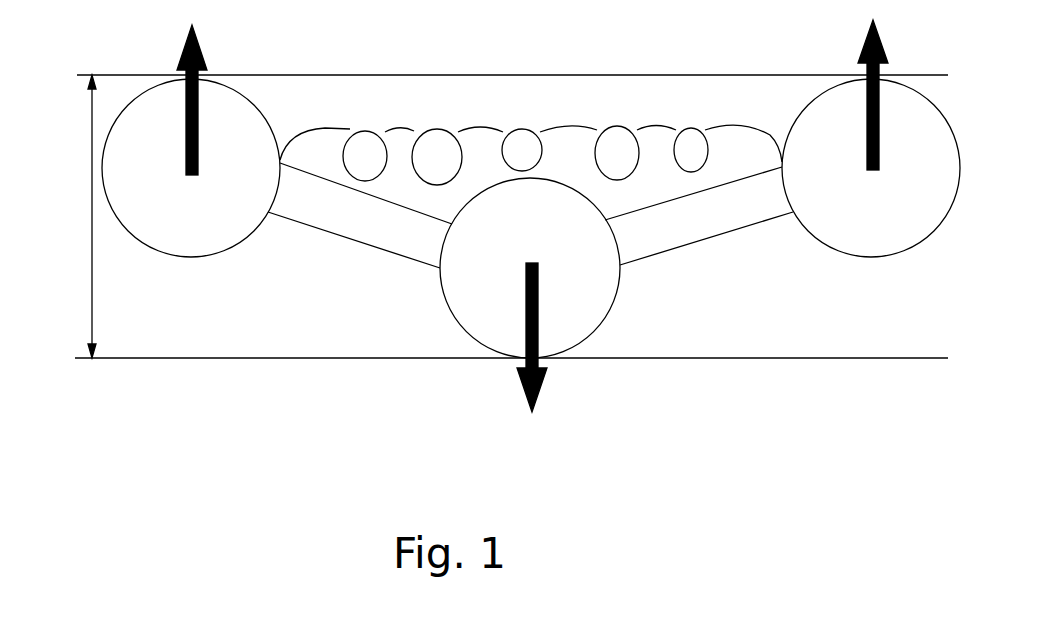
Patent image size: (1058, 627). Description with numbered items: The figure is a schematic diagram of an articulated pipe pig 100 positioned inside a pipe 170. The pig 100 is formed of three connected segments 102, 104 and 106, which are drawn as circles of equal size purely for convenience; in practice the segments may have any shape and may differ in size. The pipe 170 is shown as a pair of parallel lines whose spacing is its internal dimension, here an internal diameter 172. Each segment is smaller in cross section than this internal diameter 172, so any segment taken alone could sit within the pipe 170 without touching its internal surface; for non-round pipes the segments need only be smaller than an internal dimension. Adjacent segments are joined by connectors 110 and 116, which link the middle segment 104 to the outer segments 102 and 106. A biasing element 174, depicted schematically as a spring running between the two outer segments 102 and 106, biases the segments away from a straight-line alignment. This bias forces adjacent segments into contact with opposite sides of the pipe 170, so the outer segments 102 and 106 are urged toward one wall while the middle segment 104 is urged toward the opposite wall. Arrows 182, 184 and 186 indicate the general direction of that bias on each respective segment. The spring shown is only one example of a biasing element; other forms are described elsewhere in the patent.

The pipe pig 100 is at (326, 299).
The segment 102 is at (863, 257).
The segment 104 is at (612, 308).
The segment 106 is at (195, 258).
The connector 110 is at (713, 240).
The connector 116 is at (420, 262).
The pipe 170 is at (440, 73).
The internal diameter 172 is at (69, 216).
The biasing element 174 is at (567, 119).
The arrow 182 is at (863, 42).
The arrow 184 is at (542, 387).
The arrow 186 is at (202, 43).